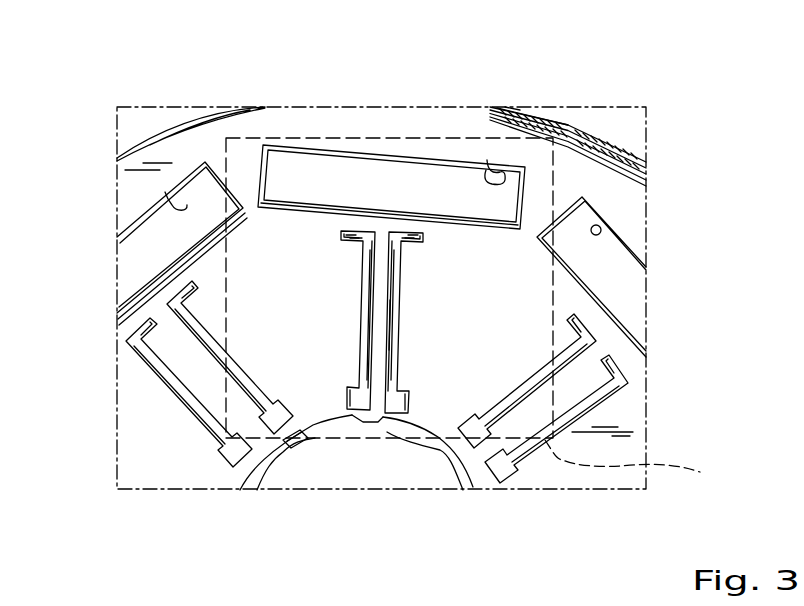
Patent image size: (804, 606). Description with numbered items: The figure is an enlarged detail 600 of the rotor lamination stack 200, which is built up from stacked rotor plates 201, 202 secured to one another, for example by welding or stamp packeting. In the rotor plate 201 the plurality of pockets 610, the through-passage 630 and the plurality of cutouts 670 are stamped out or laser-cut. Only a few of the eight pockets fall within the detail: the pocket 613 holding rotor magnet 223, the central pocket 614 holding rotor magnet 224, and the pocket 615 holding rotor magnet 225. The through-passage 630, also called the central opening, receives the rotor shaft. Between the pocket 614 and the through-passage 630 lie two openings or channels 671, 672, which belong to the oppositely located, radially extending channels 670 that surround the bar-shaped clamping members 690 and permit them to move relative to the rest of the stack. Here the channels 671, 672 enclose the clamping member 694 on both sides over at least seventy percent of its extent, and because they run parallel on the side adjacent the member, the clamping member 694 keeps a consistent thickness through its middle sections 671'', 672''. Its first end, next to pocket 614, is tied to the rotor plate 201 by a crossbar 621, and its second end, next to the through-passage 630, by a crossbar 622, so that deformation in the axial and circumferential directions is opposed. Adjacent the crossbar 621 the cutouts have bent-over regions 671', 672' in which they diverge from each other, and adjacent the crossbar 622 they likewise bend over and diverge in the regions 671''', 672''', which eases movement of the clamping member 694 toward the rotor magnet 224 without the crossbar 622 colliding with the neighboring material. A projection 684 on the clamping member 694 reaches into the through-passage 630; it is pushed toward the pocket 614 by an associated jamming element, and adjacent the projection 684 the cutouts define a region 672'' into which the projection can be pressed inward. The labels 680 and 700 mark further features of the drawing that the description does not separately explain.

The enlarged detail 600 is at (140, 70).
The pocket 613 is at (187, 205).
The crossbar 621 is at (420, 228).
The rotor magnet 224 is at (435, 182).
The pocket 614 is at (487, 160).
The plurality of pockets 610 is at (574, 114).
The rotor plate 201 is at (570, 120).
The rotor plate 202 is at (578, 145).
The pocket 615 is at (600, 226).
The rotor magnet 225 is at (603, 273).
The plurality of clamping members 690 is at (565, 343).
The lamination stack 200 is at (607, 398).
The carrier 700 is at (748, 492).
The rotor magnet 223 is at (140, 262).
The channels 670 is at (178, 388).
The channel 671 is at (320, 320).
The bent-over region 671' is at (318, 252).
The middle section 671'' is at (318, 315).
The first clamp foot 671''' is at (311, 357).
The channel 672 is at (444, 322).
The bent-over region 672' is at (456, 252).
The middle section 672'' is at (453, 315).
The second clamp foot 672''' is at (460, 376).
The clamping member 694 is at (383, 322).
The latch 680 is at (301, 462).
The through-passage 630 is at (346, 420).
The crossbar 622 is at (352, 425).
The projection 684 is at (373, 444).